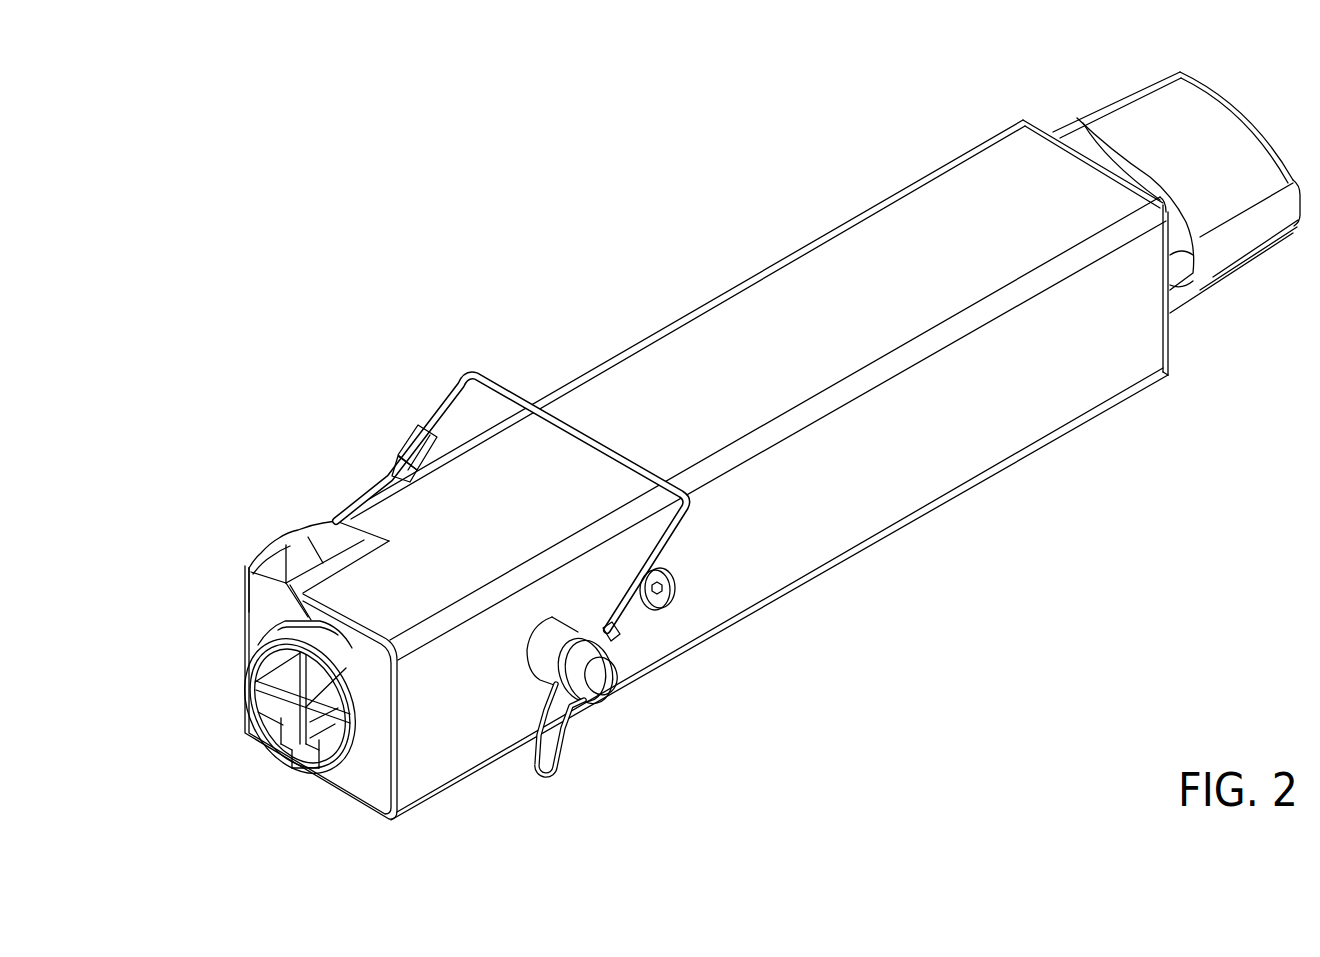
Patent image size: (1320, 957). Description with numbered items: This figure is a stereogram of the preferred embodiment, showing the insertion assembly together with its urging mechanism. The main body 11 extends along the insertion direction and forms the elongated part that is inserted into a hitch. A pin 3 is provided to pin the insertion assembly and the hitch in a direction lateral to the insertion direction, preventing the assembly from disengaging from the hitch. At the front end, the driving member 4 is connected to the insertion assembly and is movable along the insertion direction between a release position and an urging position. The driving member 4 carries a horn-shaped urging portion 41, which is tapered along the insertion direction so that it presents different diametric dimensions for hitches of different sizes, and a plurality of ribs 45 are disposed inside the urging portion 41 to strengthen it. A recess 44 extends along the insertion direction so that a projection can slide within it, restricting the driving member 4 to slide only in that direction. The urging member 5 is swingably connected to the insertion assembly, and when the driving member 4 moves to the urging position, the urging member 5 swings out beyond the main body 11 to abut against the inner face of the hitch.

The main body 11 is at (738, 322).
The urging member 5 is at (266, 528).
The driving member 4 is at (378, 715).
The urging portion 41 is at (336, 640).
The ribs 45 is at (268, 712).
The recess 44 is at (301, 776).
The pin 3 is at (594, 665).